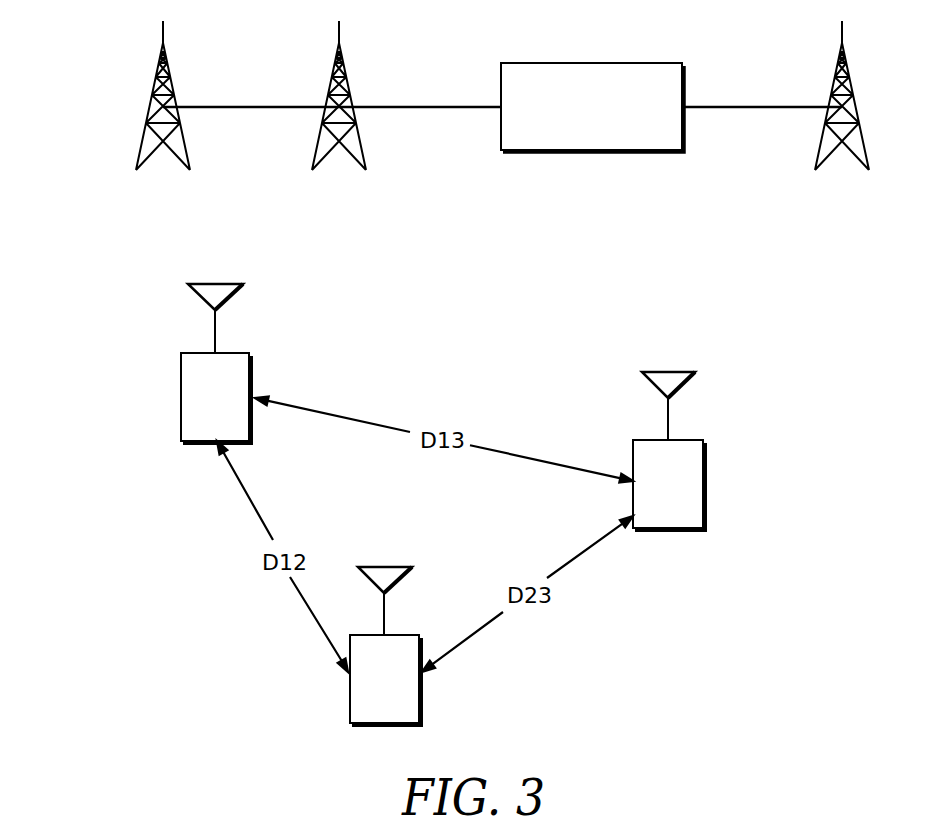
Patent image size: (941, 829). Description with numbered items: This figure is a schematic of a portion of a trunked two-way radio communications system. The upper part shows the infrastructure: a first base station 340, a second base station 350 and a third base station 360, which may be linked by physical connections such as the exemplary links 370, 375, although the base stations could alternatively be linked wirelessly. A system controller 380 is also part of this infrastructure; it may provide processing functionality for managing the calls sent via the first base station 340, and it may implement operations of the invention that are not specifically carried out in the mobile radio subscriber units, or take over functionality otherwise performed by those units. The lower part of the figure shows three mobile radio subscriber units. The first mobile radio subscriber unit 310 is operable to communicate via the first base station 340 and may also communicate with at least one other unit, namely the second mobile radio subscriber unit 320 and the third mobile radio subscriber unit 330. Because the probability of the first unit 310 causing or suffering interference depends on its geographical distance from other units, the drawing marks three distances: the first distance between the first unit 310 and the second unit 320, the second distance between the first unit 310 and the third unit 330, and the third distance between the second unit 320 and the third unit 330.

The first mobile radio subscriber unit 310 is at (198, 353).
The second mobile radio subscriber unit 320 is at (400, 635).
The third mobile radio subscriber unit 330 is at (685, 440).
The first base station 340 is at (858, 107).
The second base station 350 is at (345, 67).
The third base station 360 is at (150, 107).
The link 370 is at (251, 107).
The link 375 is at (757, 107).
The system controller 380 is at (663, 63).